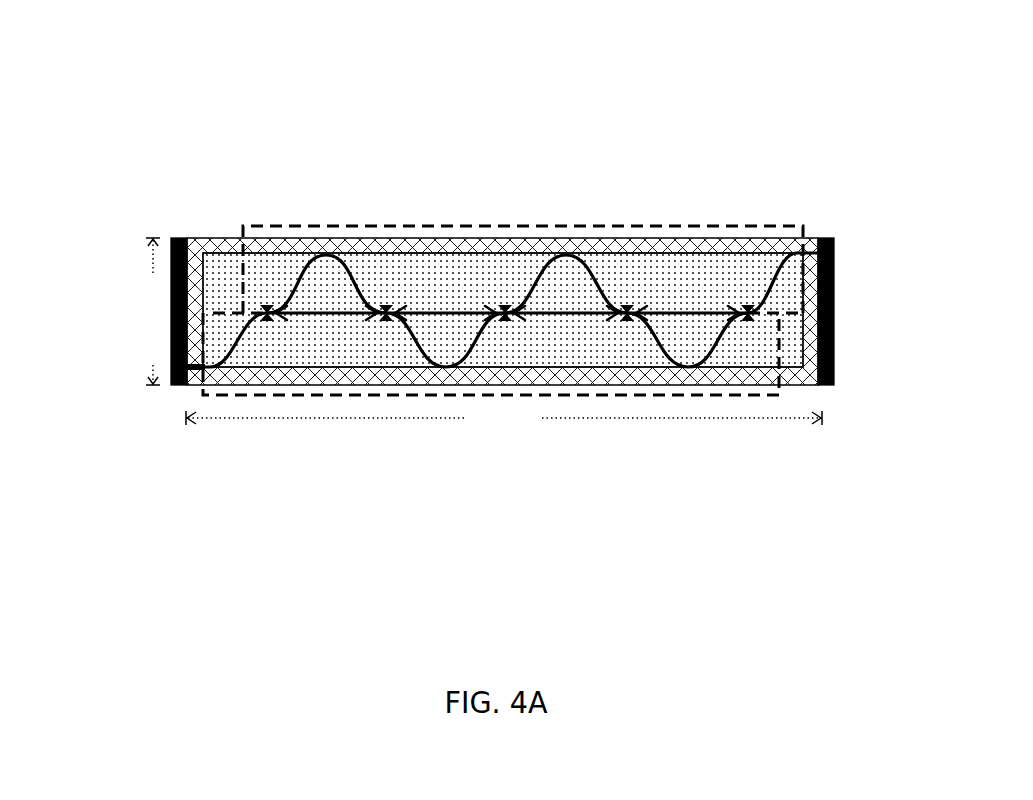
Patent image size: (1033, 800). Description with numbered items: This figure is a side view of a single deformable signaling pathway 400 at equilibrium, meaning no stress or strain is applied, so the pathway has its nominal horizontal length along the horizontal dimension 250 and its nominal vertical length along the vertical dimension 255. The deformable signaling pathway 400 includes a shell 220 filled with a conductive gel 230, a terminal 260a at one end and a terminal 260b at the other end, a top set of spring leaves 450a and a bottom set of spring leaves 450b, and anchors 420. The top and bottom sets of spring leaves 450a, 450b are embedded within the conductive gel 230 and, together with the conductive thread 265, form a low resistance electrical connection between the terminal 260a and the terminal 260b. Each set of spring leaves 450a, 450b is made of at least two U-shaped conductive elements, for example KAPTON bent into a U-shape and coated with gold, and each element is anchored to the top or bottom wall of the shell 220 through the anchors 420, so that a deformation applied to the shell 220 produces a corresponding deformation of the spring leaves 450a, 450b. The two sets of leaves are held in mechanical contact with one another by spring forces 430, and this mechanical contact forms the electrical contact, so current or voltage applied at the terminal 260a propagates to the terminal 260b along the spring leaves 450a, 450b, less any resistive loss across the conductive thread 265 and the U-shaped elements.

The deformable signaling pathway 400 is at (73, 28).
The shell 220 is at (399, 240).
The conductive gel 230 is at (448, 280).
The terminal 260a is at (175, 238).
The terminal 260b is at (832, 238).
The conductive thread 265 is at (833, 279).
The spring forces 430 is at (628, 295).
The anchors 420 is at (690, 362).
The top set of spring leaves 450a is at (313, 227).
The bottom set of spring leaves 450b is at (258, 398).
The vertical dimension 255 is at (140, 308).
The horizontal dimension 250 is at (430, 422).